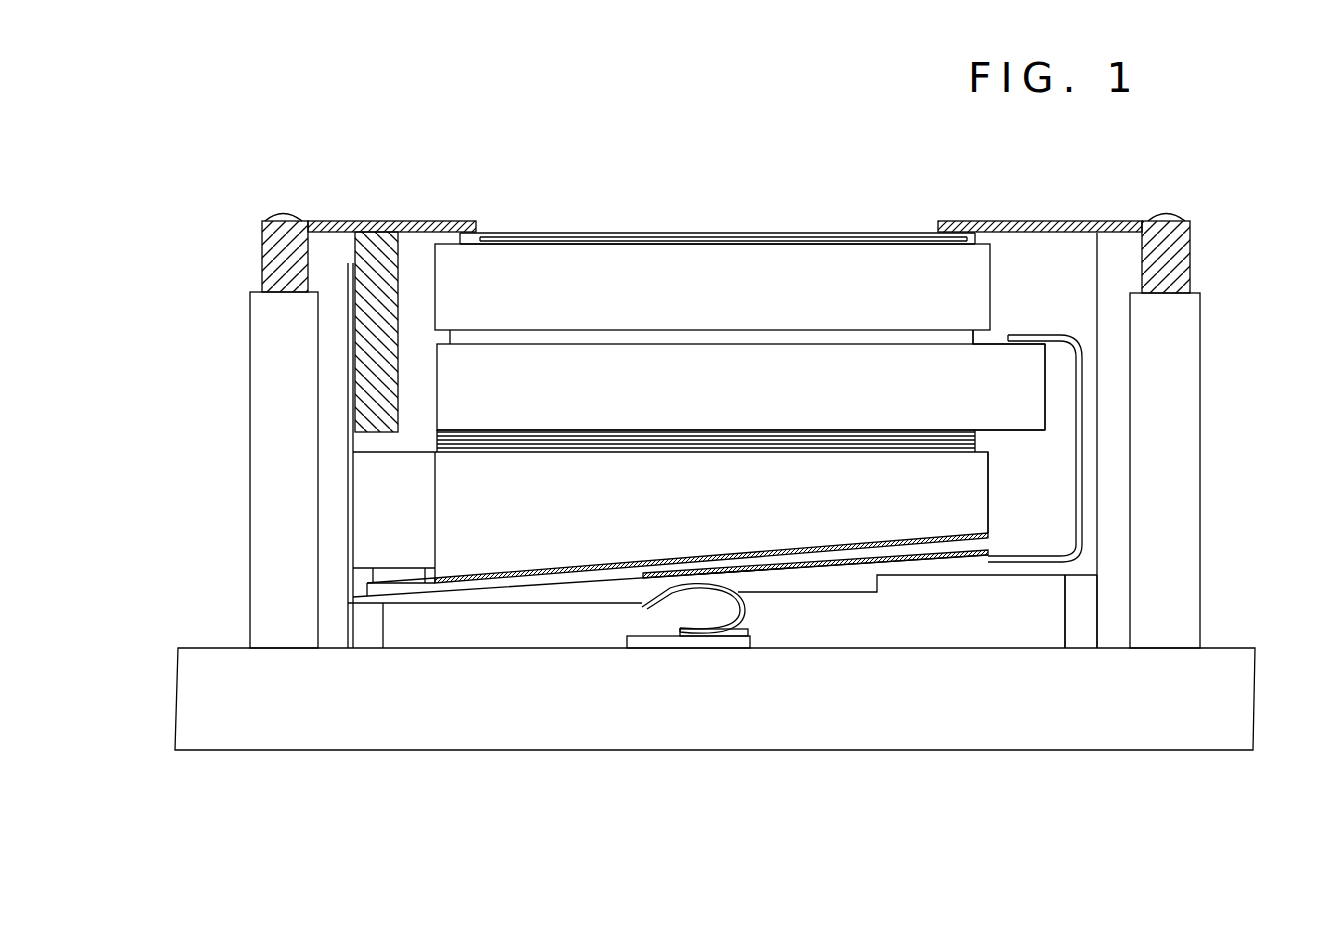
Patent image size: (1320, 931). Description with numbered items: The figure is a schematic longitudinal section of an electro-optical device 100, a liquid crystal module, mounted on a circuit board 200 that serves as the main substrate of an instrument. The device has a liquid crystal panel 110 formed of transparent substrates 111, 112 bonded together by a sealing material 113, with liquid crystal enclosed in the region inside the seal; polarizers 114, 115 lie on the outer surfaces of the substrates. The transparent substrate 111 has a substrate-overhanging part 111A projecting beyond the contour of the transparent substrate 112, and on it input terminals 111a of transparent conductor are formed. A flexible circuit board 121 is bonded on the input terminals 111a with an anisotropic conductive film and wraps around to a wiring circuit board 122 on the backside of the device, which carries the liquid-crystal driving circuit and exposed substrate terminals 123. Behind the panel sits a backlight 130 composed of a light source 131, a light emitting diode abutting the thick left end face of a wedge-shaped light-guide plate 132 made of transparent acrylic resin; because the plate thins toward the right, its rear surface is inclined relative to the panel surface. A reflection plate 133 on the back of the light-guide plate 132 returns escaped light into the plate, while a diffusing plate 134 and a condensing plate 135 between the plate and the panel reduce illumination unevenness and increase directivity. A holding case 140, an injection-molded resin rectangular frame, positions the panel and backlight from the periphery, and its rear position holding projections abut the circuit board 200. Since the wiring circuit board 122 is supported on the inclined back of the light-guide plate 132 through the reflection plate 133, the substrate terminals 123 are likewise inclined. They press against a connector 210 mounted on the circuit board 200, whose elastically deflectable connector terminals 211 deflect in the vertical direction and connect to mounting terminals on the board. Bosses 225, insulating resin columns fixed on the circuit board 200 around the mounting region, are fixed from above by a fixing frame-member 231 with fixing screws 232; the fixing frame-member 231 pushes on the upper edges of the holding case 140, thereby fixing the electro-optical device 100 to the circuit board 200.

The electro-optical device 100 is at (786, 155).
The liquid crystal panel 110 is at (685, 271).
The transparent substrate 111 is at (570, 412).
The substrate-overhanging part 111A is at (1045, 392).
The input terminals 111a is at (983, 347).
The transparent substrate 112 is at (555, 270).
The sealing material 113 is at (780, 338).
The polarizer 114 is at (770, 430).
The polarizer 115 is at (810, 245).
The flexible circuit board 121 is at (1062, 335).
The wiring circuit board 122 is at (835, 568).
The substrate terminals 123 is at (773, 578).
The backlight 130 is at (585, 545).
The light source 131 is at (368, 540).
The light-guide plate 132 is at (940, 503).
The reflection plate 133 is at (705, 560).
The diffusing plate 134 is at (807, 450).
The condensing plate 135 is at (842, 445).
The holding case 140 is at (373, 245).
The circuit board 200 is at (213, 648).
The connector 210 is at (680, 660).
The connector terminals 211 is at (675, 590).
The bosses 225 is at (258, 402).
The fixing frame-member 231 is at (268, 245).
The fixing screws 232 is at (282, 212).